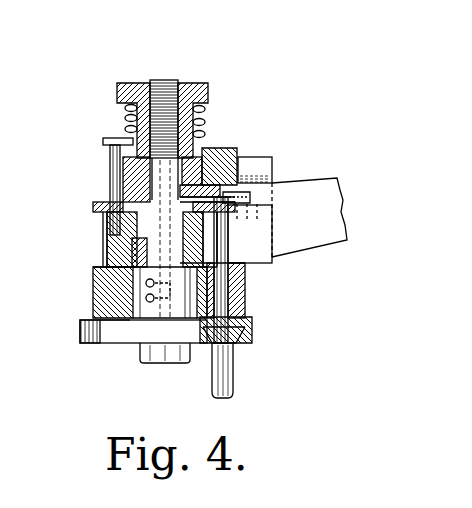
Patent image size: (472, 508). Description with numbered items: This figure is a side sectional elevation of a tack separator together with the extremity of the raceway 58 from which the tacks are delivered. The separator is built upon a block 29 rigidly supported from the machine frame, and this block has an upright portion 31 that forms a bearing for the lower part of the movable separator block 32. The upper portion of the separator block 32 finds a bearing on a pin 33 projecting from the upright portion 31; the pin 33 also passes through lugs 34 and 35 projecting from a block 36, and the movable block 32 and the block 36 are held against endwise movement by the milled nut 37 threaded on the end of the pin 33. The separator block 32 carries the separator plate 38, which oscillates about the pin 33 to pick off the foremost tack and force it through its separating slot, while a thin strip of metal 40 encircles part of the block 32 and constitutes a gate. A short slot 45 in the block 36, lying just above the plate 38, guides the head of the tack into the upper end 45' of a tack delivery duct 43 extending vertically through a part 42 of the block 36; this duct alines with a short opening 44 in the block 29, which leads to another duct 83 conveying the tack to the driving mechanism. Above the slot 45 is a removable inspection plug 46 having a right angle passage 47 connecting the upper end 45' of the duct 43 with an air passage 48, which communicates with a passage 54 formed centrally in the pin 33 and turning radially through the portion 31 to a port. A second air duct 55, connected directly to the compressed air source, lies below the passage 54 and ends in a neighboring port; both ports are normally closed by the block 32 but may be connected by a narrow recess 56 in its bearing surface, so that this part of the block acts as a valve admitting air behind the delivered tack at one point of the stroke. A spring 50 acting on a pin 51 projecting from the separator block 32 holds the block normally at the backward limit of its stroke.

The block 29 is at (80, 343).
The upright portion 31 is at (190, 301).
The movable separator block 32 is at (92, 295).
The pin 33 is at (107, 220).
The lug 34 is at (121, 173).
The lug 35 is at (127, 249).
The block 36 is at (256, 177).
The milled nut 37 is at (119, 93).
The separator plate 38 is at (93, 204).
The thin strip of metal 40 is at (107, 235).
The part of the block 42 is at (247, 298).
The tack delivery duct 43 is at (247, 269).
The short opening 44 is at (253, 323).
The short slot 45 is at (269, 205).
The upper end of the duct 45' is at (283, 160).
The removable inspection plug 46 is at (212, 151).
The right angle passage 47 is at (240, 183).
The air duct 48 is at (196, 146).
The spring 50 is at (126, 117).
The pin 51 is at (109, 153).
The air passage 54 is at (92, 270).
The air duct 55 is at (173, 300).
The recess or cavity 56 is at (115, 322).
The arm 58 is at (275, 190).
The duct 83 is at (234, 367).